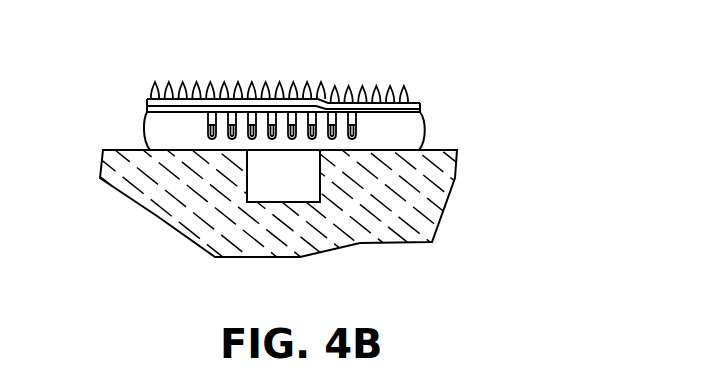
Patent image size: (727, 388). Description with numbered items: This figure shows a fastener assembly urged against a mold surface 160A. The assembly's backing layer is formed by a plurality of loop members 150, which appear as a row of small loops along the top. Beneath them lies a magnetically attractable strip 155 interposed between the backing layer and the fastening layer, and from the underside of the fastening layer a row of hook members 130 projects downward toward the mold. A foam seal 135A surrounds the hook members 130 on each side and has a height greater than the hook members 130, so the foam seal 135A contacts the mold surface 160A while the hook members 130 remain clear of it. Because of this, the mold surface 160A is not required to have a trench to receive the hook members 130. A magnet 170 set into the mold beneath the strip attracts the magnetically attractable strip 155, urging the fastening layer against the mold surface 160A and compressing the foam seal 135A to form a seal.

The hook members 130 is at (231, 115).
The foam seal 135A is at (145, 131).
The loop members 150 is at (348, 92).
The magnetically attractable strip 155 is at (292, 99).
The mold surface 160A is at (453, 149).
The magnet 170 is at (297, 250).